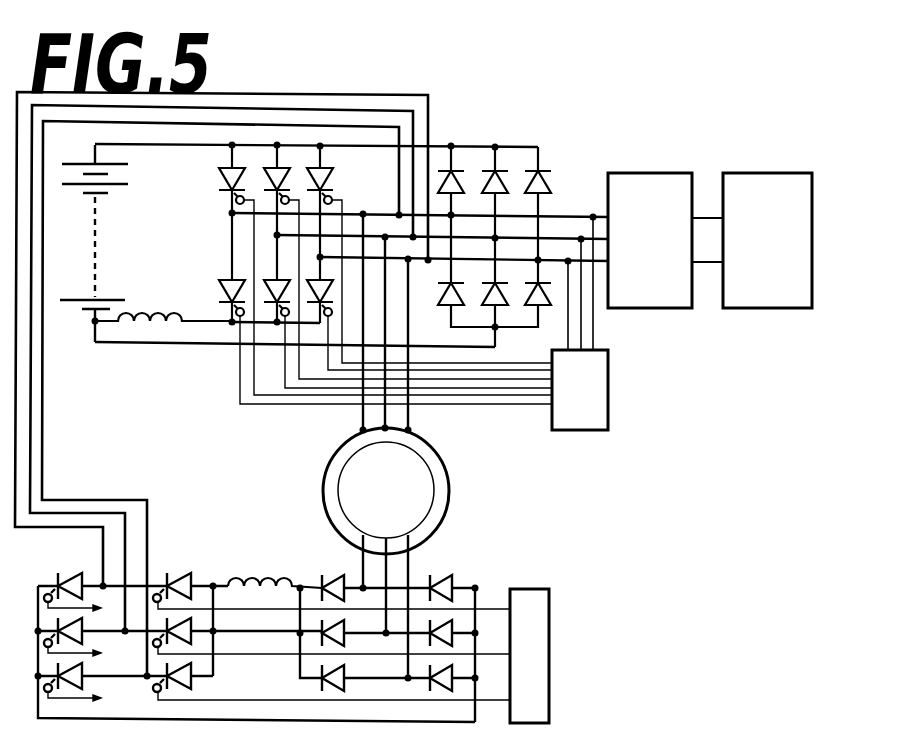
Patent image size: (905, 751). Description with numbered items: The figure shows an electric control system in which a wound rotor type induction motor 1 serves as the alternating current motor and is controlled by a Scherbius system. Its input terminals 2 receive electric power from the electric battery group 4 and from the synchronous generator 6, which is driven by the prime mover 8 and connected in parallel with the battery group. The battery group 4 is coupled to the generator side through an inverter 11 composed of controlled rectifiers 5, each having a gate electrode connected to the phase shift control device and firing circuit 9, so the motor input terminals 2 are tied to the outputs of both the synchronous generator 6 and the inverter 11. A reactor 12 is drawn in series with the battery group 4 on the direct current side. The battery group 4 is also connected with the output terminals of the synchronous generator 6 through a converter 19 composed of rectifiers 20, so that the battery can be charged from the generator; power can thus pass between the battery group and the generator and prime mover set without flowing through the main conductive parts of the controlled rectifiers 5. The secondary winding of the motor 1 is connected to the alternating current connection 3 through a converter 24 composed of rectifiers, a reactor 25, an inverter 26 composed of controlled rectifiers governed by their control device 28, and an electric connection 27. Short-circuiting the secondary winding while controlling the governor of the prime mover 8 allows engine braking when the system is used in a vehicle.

The wound rotor type induction motor 1 is at (466, 494).
The input terminals 2 is at (410, 428).
The alternating current connection 3 is at (408, 264).
The electric battery group 4 is at (97, 243).
The controlled rectifiers 5 is at (221, 182).
The synchronous generator 6 is at (660, 363).
The prime mover 8 is at (752, 326).
The phase shift control device and firing circuit 9 is at (586, 458).
The inverter 11 is at (223, 234).
The reactor 12 is at (146, 318).
The converter 19 is at (550, 205).
The rectifiers 20 is at (441, 292).
The converter 24 is at (426, 581).
The reactor 25 is at (256, 582).
The inverter 26 is at (155, 581).
The electric connection 27 is at (93, 527).
The control device 28 is at (578, 655).